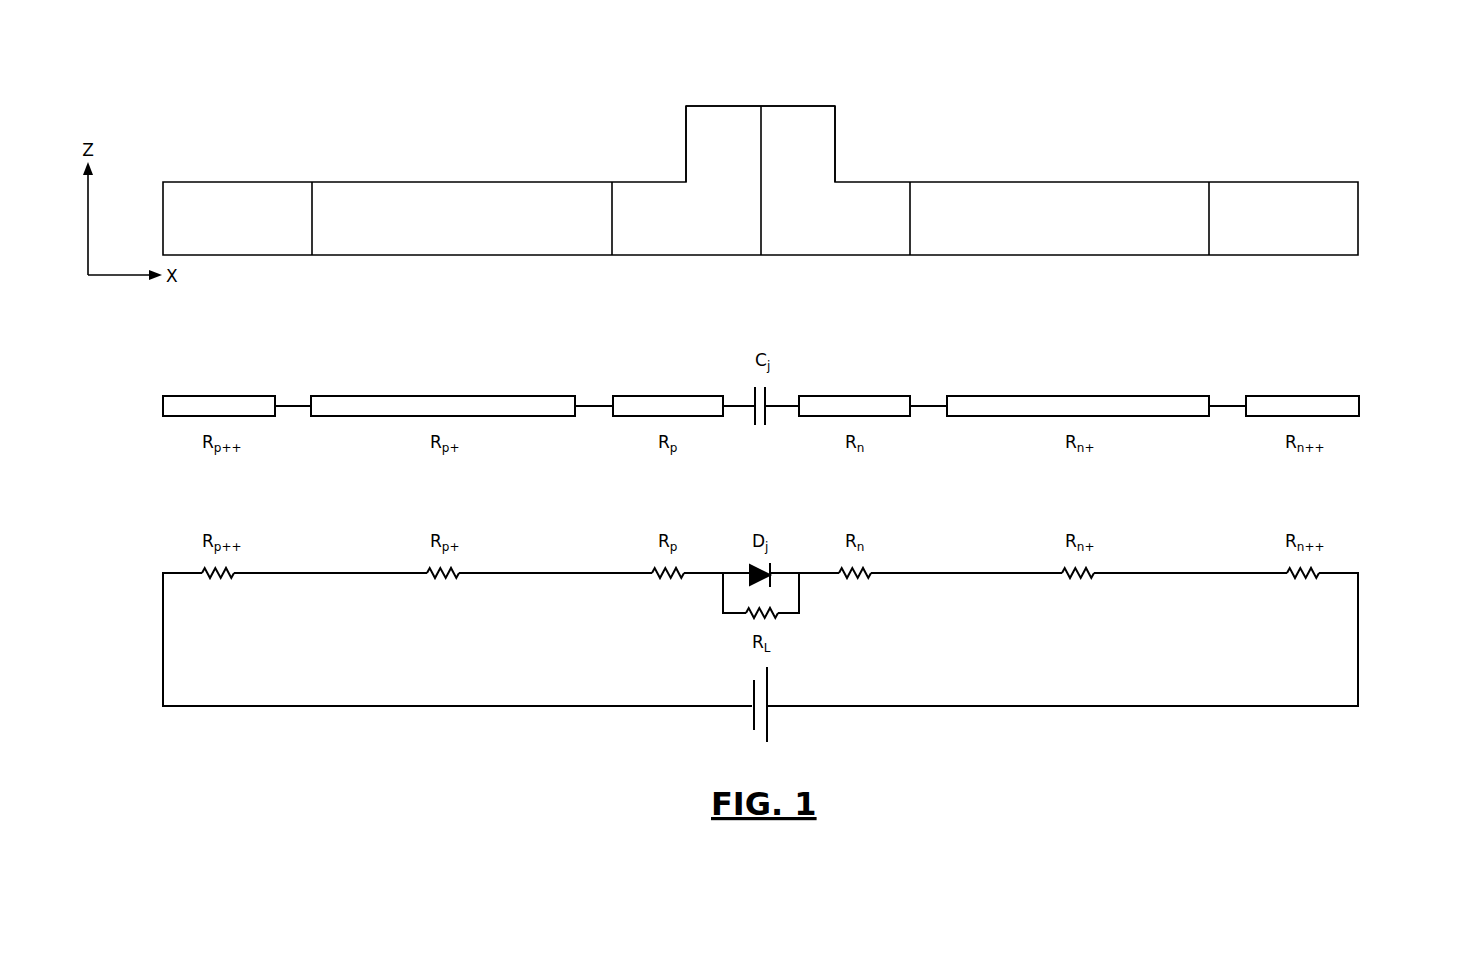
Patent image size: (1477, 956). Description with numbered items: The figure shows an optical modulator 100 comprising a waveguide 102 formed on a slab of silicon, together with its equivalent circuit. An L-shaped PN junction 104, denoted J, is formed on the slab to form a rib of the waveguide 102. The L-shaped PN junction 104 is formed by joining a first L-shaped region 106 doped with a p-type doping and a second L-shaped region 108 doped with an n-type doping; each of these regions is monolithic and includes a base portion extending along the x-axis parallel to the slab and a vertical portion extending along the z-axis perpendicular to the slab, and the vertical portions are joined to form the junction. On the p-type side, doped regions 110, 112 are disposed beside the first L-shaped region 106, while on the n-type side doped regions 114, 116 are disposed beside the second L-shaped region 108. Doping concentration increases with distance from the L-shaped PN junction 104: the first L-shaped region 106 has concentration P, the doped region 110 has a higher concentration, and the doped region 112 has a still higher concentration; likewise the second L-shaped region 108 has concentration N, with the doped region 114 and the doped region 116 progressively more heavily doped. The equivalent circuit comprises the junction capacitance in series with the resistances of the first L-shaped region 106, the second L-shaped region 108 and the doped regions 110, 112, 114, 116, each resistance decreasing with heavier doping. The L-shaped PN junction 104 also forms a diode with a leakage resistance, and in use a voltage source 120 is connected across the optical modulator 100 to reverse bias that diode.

The optical modulator 100 is at (807, 170).
The waveguide 102 is at (1386, 210).
The L-shaped PN junction 104 is at (773, 88).
The first L-shaped region 106 is at (684, 142).
The second L-shaped region 108 is at (837, 142).
The doped region 110 is at (460, 180).
The doped region 112 is at (237, 180).
The doped region 114 is at (1062, 180).
The doped region 116 is at (1285, 180).
The voltage source 120 is at (752, 720).